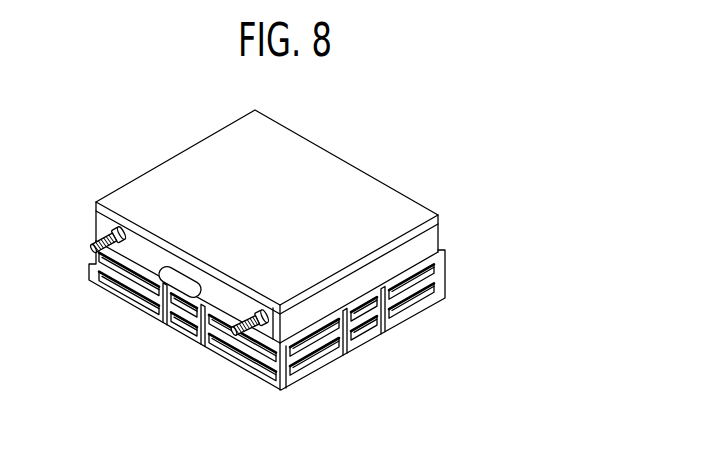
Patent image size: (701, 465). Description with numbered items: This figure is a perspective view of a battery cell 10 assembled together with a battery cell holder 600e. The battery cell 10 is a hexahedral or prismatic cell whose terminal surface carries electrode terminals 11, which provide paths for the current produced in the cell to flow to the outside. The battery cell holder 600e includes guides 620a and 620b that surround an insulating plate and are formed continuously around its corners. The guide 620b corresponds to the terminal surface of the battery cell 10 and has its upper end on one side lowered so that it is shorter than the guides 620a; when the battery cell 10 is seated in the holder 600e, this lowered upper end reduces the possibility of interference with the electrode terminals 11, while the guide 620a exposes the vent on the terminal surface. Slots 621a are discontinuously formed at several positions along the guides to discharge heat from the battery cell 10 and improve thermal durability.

The battery cell 10 is at (220, 157).
The electrode terminals 11 is at (90, 251).
The battery cell holder 600e is at (321, 321).
The guide 620a is at (391, 332).
The guide 620b is at (164, 306).
The slots 621a is at (370, 322).